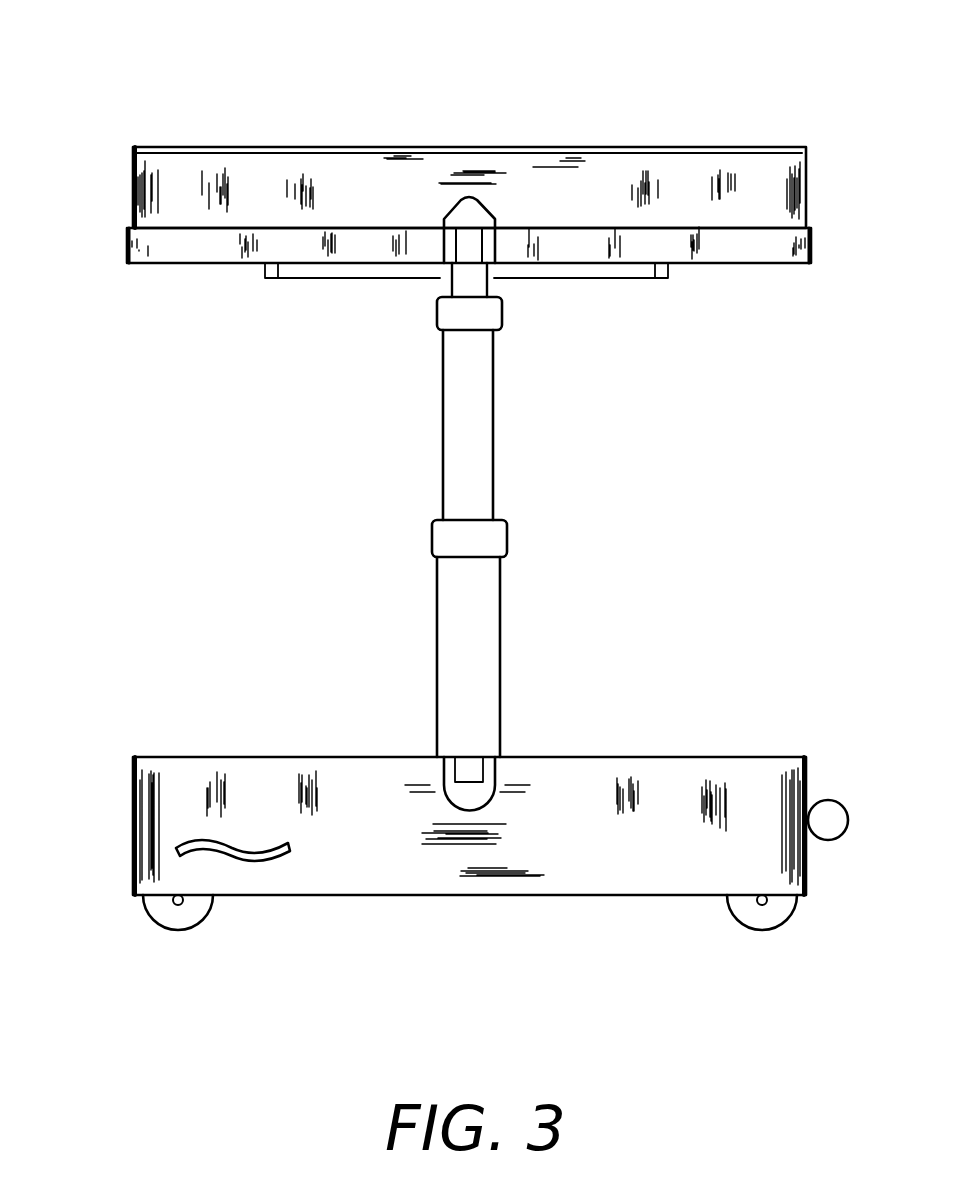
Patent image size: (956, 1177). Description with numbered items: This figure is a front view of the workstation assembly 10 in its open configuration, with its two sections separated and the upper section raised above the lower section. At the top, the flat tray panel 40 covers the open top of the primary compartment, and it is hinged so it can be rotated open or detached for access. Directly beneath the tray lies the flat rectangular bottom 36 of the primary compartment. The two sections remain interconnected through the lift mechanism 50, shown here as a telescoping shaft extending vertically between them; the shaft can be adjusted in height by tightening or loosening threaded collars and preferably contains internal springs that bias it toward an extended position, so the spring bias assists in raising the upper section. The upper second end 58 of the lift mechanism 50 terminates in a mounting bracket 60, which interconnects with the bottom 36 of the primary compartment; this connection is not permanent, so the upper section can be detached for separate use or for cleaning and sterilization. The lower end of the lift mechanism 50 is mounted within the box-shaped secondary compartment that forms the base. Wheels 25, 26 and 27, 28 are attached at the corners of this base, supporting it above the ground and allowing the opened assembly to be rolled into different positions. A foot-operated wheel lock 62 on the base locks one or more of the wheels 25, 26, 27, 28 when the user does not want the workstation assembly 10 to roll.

The workstation assembly 10 is at (133, 102).
The flat tray panel 40 is at (381, 147).
The flat rectangular bottom 36 is at (718, 263).
The mounting bracket 60 is at (360, 268).
The second end 58 is at (471, 263).
The lift mechanism 50 is at (497, 440).
The wheel lock 62 is at (263, 858).
The wheel 27 is at (150, 965).
The wheel 28 is at (178, 922).
The wheel 25 is at (722, 962).
The wheel 26 is at (748, 915).